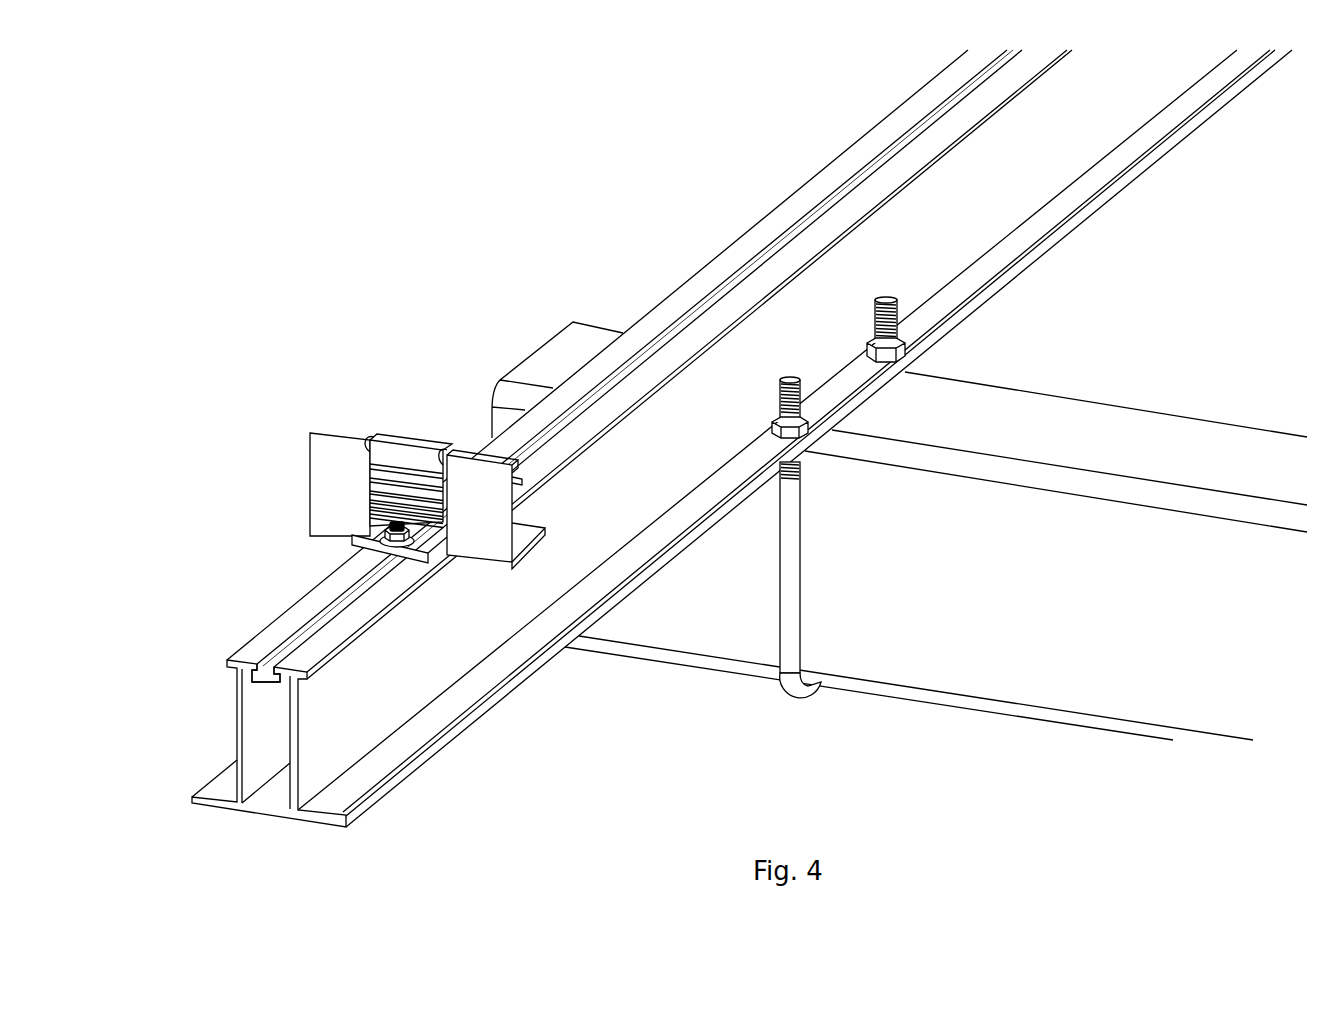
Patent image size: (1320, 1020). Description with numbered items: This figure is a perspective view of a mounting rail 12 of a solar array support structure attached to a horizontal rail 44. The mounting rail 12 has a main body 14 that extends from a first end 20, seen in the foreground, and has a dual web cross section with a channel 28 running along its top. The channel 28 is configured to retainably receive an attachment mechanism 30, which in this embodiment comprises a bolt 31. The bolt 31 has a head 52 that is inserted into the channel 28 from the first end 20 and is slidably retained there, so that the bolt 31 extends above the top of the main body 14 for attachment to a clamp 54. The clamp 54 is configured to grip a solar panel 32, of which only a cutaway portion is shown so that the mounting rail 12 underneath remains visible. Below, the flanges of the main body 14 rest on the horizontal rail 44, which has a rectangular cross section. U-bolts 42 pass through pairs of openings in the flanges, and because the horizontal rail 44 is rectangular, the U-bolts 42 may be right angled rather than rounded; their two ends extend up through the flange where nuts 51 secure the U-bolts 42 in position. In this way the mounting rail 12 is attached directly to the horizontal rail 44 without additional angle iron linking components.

The mounting rail 12 is at (740, 430).
The main body 14 is at (445, 660).
The first end 20 is at (266, 668).
The channel 28 is at (892, 150).
The attachment mechanism 30 is at (439, 441).
The bolt 31 is at (397, 526).
The solar panel 32 is at (482, 509).
The U-bolt 42 is at (790, 574).
The horizontal rail 44 is at (1035, 640).
The nuts 51 is at (795, 432).
The head 52 is at (358, 566).
The clamp 54 is at (395, 461).